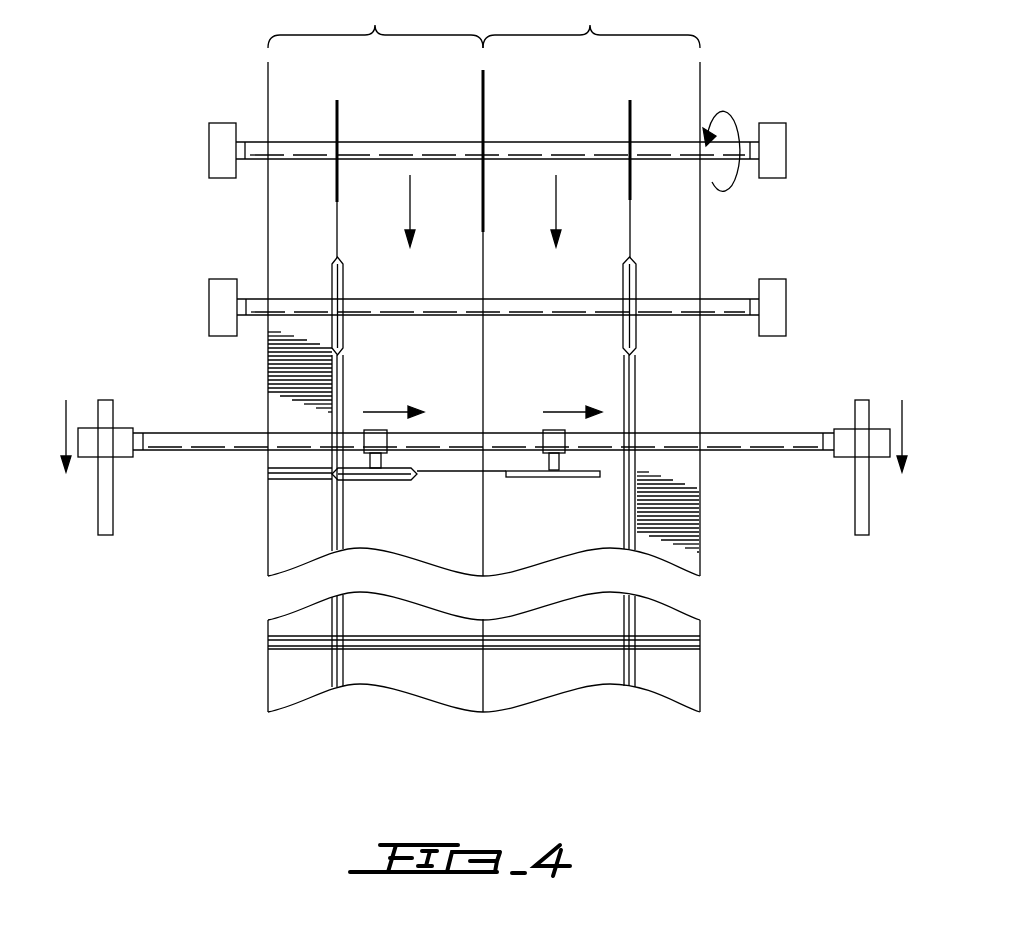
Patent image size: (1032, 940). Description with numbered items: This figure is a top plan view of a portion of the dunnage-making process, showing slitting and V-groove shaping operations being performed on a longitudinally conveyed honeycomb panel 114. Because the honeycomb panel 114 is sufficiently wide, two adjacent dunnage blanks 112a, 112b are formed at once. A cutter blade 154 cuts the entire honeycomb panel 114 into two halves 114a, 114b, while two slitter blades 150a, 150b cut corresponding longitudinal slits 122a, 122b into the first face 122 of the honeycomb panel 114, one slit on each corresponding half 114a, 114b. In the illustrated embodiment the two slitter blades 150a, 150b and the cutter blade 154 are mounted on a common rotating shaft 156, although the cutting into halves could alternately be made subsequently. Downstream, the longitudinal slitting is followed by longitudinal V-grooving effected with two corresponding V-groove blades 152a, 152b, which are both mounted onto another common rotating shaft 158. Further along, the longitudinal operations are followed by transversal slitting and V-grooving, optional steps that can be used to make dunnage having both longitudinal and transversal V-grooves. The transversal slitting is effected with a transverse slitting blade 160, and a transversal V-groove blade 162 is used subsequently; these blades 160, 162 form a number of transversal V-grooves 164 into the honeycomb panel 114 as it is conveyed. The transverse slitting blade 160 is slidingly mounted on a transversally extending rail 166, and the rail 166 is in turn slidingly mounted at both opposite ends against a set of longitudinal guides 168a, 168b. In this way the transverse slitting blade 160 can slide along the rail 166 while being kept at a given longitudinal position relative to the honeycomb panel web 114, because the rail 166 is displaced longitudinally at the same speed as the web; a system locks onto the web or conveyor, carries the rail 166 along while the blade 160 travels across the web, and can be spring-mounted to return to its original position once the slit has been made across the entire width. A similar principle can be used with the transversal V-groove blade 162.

The dunnage blank 112a is at (375, 288).
The dunnage blank 112b is at (591, 288).
The honeycomb panel 114 is at (692, 236).
The first half of honeycomb panel 114a is at (436, 367).
The second half of honeycomb panel 114b is at (578, 367).
The first face 122 is at (526, 132).
The longitudinal slit 122a is at (337, 241).
The longitudinal slit 122b is at (627, 243).
The slitter blade 150a is at (337, 105).
The slitter blade 150b is at (628, 108).
The V-groove blade 152a is at (332, 272).
The V-groove blade 152b is at (636, 280).
The cutter blade 154 is at (483, 88).
The common rotating shaft 156 is at (656, 148).
The common rotating shaft 158 is at (665, 318).
The transverse slitting blade 160 is at (578, 477).
The transversal V-groove blade 162 is at (380, 480).
The transversal V-groove 164 is at (292, 475).
The transversally extending rail 166 is at (498, 443).
The longitudinal guide 168a is at (113, 510).
The longitudinal guide 168b is at (862, 500).